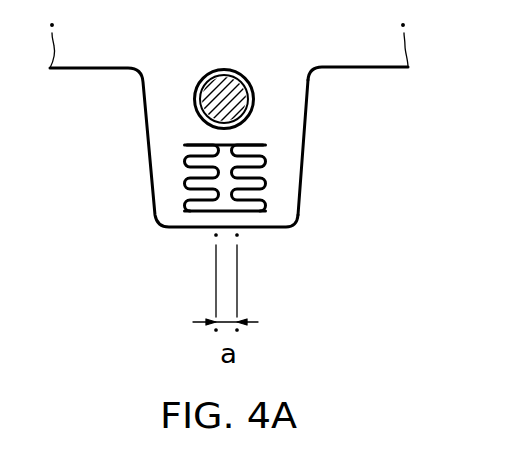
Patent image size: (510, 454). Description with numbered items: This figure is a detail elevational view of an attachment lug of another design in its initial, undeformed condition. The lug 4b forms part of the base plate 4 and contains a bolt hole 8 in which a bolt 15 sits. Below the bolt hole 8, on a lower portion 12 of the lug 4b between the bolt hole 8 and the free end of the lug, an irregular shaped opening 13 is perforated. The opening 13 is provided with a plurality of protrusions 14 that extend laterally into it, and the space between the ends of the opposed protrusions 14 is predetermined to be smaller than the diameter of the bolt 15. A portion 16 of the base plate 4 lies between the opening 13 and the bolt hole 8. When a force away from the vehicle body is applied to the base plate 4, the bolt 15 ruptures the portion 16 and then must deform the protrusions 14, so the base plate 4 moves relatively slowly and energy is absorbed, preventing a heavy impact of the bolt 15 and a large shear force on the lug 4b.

The base plate 4 is at (346, 77).
The lug 4b is at (301, 176).
The bolt hole 8 is at (207, 73).
The lower portion of the lug 12 is at (146, 183).
The irregular shaped opening 13 is at (203, 213).
The protrusions 14 is at (213, 180).
The bolt 15 is at (243, 72).
The portion of the base plate 16 is at (217, 136).